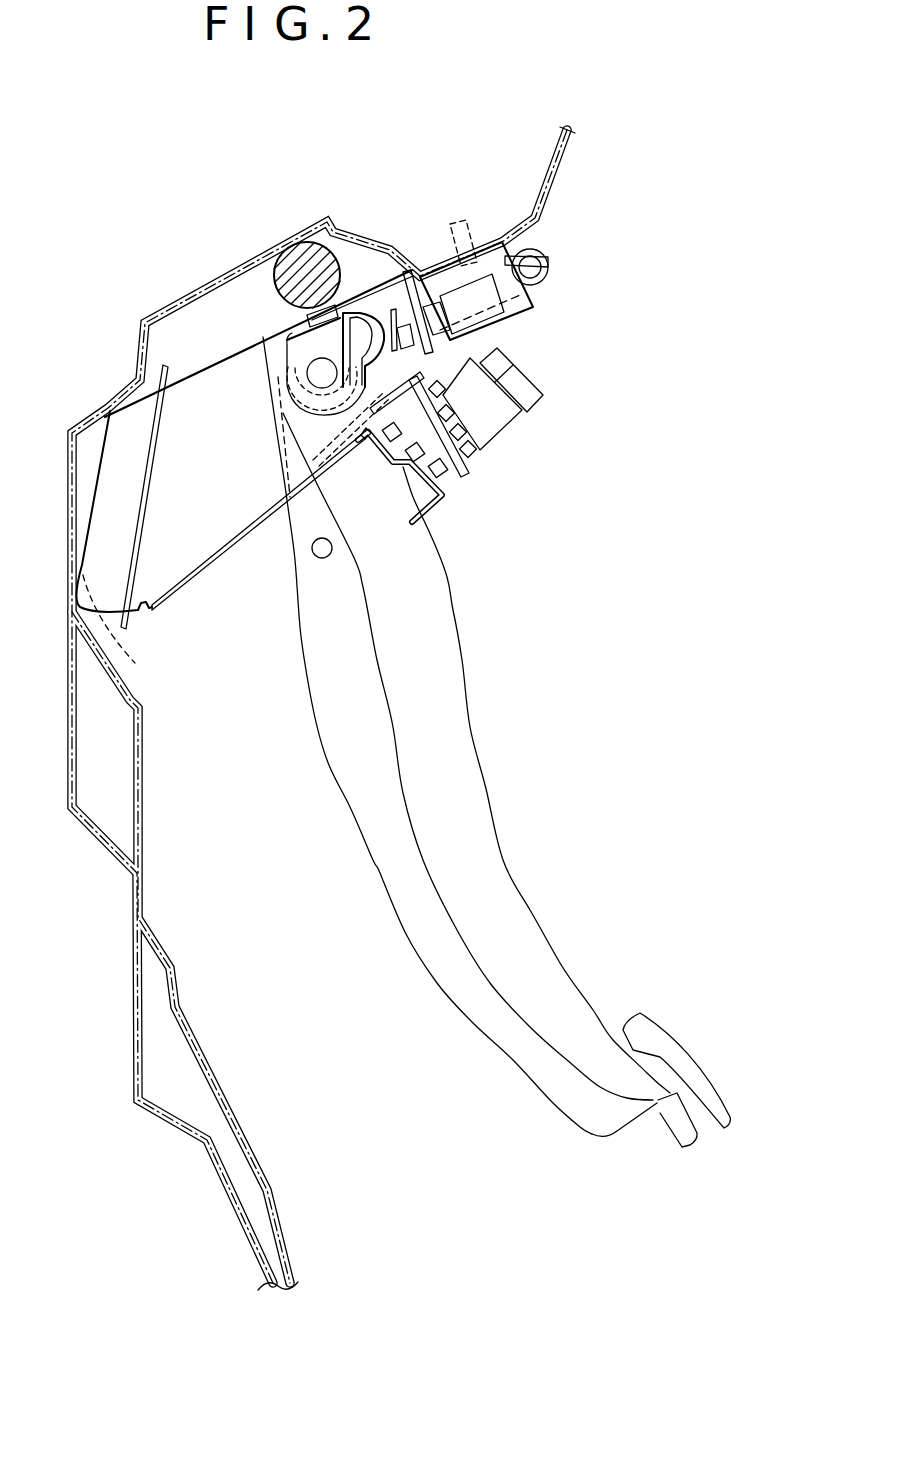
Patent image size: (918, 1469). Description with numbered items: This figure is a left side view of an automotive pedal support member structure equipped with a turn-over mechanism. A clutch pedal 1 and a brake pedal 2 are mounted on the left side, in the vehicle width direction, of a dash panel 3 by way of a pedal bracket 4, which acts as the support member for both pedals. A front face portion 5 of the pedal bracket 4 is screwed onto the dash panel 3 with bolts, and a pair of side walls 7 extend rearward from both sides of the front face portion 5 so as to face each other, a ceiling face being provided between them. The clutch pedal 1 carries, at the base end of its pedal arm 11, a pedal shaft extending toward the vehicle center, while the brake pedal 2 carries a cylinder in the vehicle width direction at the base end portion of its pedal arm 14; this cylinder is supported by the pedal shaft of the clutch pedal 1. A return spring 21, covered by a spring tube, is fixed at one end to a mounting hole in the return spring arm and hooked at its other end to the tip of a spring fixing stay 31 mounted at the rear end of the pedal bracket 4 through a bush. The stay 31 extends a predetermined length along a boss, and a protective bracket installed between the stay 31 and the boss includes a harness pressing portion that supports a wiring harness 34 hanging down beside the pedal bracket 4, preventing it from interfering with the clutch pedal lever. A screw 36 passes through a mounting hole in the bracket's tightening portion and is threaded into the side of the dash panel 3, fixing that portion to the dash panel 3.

The clutch pedal 1 is at (670, 1030).
The brake pedal 2 is at (628, 1120).
The dash panel 3 is at (143, 904).
The pedal bracket 4 is at (187, 582).
The front face portion 5 is at (124, 631).
The side walls 7 is at (231, 507).
The pedal arm 11 is at (473, 752).
The pedal arm 14 is at (412, 930).
The return spring 21 is at (540, 284).
The spring fixing stay 31 is at (549, 262).
The wiring harness 34 is at (330, 248).
The screw 36 is at (466, 222).